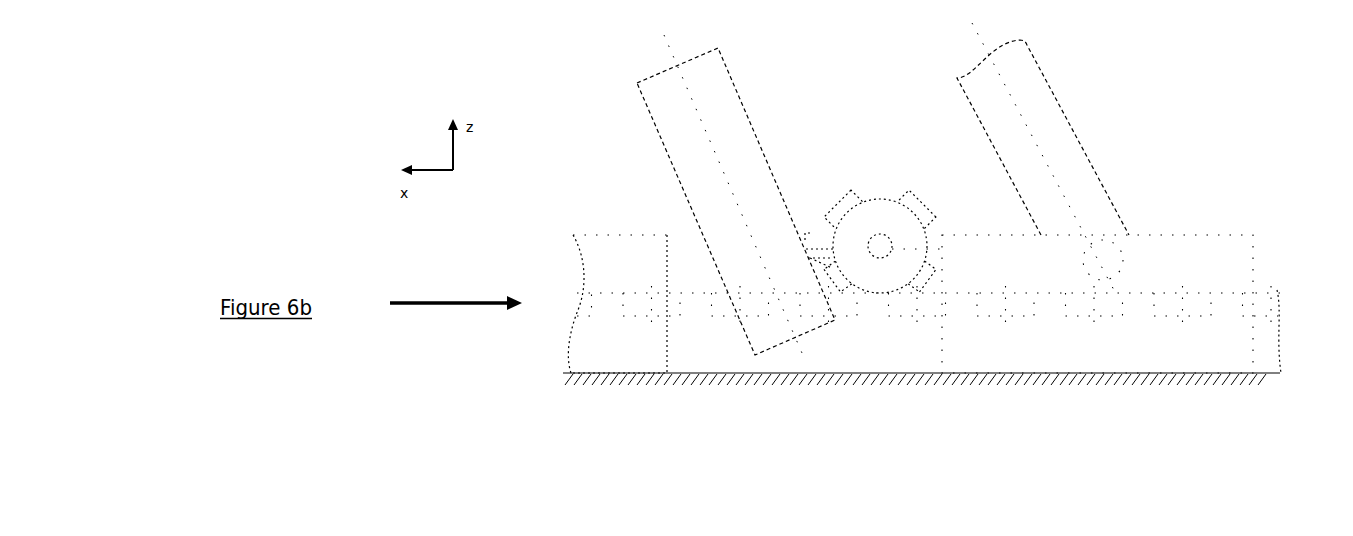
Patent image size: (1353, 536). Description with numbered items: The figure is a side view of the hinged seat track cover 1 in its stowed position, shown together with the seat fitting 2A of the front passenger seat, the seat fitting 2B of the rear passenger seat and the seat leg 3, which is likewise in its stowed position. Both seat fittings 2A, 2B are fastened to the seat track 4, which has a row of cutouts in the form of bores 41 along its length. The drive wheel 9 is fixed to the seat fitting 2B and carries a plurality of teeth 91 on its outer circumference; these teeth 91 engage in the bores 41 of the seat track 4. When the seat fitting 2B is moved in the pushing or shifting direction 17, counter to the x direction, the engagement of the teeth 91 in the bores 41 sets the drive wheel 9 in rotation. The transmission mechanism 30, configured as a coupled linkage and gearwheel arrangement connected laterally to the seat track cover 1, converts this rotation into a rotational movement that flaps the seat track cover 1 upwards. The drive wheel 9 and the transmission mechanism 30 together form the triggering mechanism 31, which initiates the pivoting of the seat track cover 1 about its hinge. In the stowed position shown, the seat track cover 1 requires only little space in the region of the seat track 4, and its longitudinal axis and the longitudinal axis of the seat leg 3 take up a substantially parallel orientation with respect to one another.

The seat track cover 1 is at (752, 72).
The seat leg 3 is at (1092, 65).
The triggering mechanism 31 is at (896, 127).
The transmission mechanism 30 is at (810, 188).
The drive wheel 9 is at (878, 197).
The teeth 91 is at (919, 198).
The seat fitting 2A is at (588, 238).
The seat fitting 2B is at (1241, 242).
The seat track 4 is at (1293, 350).
The bores 41 is at (651, 290).
The pushing or shifting direction 17 is at (426, 298).